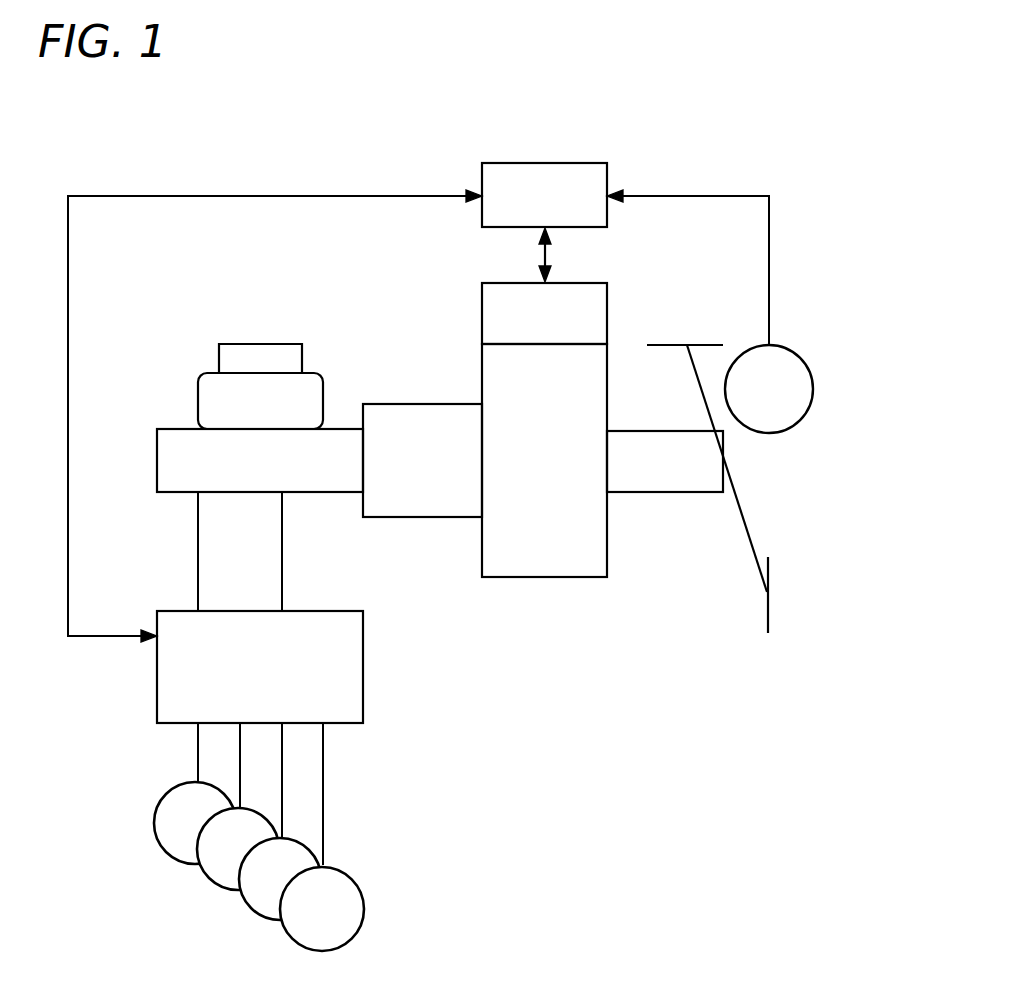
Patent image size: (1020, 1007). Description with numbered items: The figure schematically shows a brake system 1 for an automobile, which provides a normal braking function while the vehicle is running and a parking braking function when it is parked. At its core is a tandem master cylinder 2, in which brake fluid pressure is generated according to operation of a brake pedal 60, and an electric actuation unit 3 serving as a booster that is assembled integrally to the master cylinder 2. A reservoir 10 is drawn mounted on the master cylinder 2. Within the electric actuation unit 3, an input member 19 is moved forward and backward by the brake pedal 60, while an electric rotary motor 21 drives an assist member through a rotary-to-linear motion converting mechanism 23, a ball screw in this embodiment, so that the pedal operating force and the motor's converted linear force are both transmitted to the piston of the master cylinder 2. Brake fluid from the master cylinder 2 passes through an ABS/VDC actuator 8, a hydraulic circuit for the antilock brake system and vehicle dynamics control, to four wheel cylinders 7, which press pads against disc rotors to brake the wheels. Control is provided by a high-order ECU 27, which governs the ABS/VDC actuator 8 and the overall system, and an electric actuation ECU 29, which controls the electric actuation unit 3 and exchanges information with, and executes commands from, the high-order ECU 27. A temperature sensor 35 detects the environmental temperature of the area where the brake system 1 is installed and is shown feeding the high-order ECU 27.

The brake system 1 is at (639, 742).
The tandem master cylinder 2 is at (157, 458).
The electric actuation unit 3 is at (521, 481).
The wheel cylinders 7 is at (370, 783).
The ABS/VDC actuator 8 is at (157, 683).
The reservoir 10 is at (198, 402).
The input member 19 is at (663, 492).
The electric rotary motor 21 is at (541, 578).
The rotary-to-linear motion converting mechanism 23 is at (392, 517).
The high-order ECU 27 is at (545, 163).
The electric actuation ECU 29 is at (607, 317).
The temperature sensor 35 is at (808, 363).
The brake pedal 60 is at (713, 510).